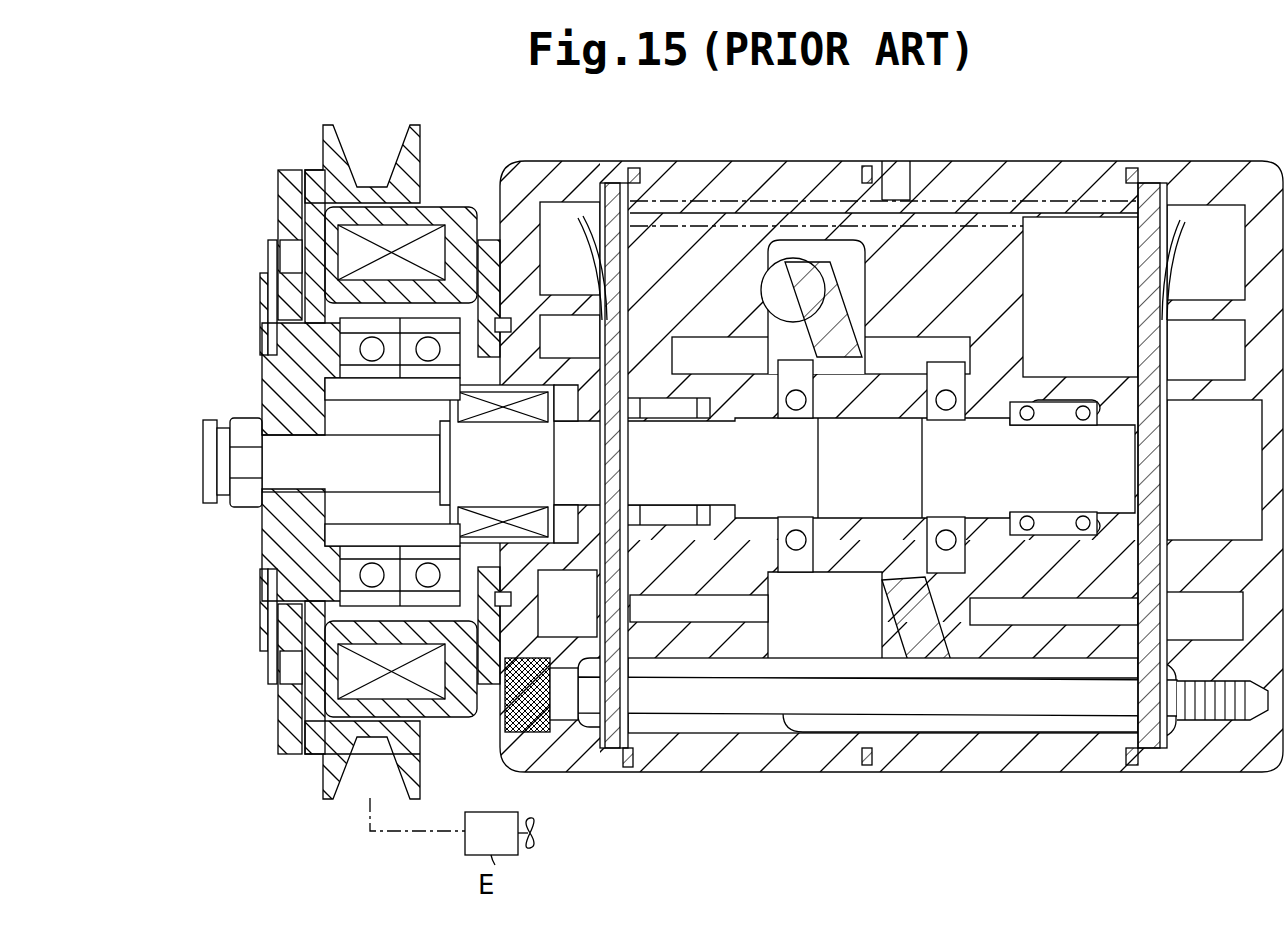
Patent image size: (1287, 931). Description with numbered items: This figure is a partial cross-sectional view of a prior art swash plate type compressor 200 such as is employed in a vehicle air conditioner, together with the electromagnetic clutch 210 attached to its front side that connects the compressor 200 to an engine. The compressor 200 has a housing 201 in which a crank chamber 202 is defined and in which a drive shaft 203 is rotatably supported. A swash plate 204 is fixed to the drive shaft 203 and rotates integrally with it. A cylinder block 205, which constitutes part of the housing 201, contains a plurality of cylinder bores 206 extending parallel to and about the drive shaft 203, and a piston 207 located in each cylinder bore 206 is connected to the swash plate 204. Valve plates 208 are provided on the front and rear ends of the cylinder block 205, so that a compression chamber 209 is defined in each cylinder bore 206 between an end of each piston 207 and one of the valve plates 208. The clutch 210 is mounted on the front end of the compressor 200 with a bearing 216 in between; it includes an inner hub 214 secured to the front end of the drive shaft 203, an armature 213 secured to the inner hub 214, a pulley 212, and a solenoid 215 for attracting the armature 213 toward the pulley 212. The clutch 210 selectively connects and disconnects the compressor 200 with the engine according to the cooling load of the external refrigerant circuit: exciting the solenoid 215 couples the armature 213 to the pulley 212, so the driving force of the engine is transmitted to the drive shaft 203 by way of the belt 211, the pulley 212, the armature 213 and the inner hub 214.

The compressor 200 is at (745, 158).
The housing 201 is at (958, 162).
The crank chamber 202 is at (850, 623).
The drive shaft 203 is at (724, 502).
The swash plate 204 is at (912, 648).
The cylinder block 205 is at (1037, 162).
The cylinder bore 206 is at (1087, 218).
The piston 207 is at (1020, 348).
The valve plate 208 is at (1157, 187).
The compression chamber 209 is at (1098, 297).
The electromagnetic clutch 210 is at (495, 156).
The belt 211 is at (356, 793).
The pulley 212 is at (412, 765).
The armature 213 is at (286, 696).
The inner hub 214 is at (287, 530).
The solenoid 215 is at (432, 687).
The bearing 216 is at (378, 377).